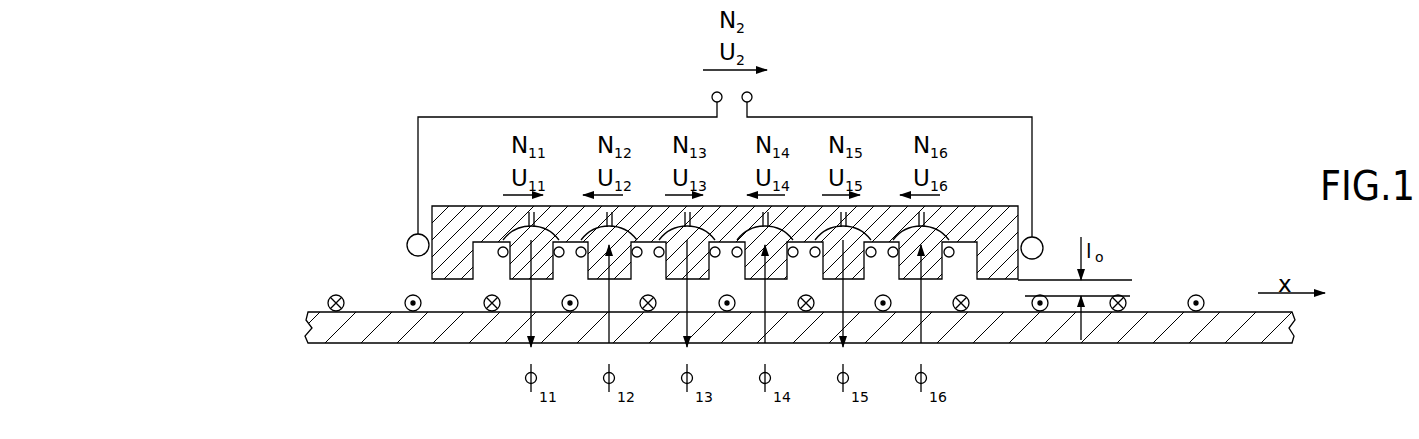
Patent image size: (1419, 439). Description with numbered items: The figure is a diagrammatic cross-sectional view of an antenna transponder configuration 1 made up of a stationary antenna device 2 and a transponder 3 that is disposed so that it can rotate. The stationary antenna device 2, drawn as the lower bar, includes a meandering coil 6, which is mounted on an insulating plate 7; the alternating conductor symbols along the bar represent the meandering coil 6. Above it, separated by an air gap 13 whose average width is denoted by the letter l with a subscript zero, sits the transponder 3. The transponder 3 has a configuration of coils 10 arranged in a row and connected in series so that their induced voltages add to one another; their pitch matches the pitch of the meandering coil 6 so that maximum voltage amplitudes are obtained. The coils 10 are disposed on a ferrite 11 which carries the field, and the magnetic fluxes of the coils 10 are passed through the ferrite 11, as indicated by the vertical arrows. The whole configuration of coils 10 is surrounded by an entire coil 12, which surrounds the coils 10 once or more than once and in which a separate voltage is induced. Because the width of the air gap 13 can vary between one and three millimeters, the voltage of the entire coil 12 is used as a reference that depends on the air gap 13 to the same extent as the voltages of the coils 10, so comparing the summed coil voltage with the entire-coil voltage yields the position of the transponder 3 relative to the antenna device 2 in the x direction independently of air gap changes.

The antenna transponder configuration 1 is at (670, 216).
The stationary antenna device 2 is at (845, 355).
The transponder 3 is at (1040, 172).
The meandering coil 6 is at (1125, 308).
The insulating plate 7 is at (1155, 333).
The coils 10 is at (559, 257).
The ferrite 11 is at (450, 258).
The entire coil 12 is at (529, 117).
The air gap 13 is at (1122, 290).